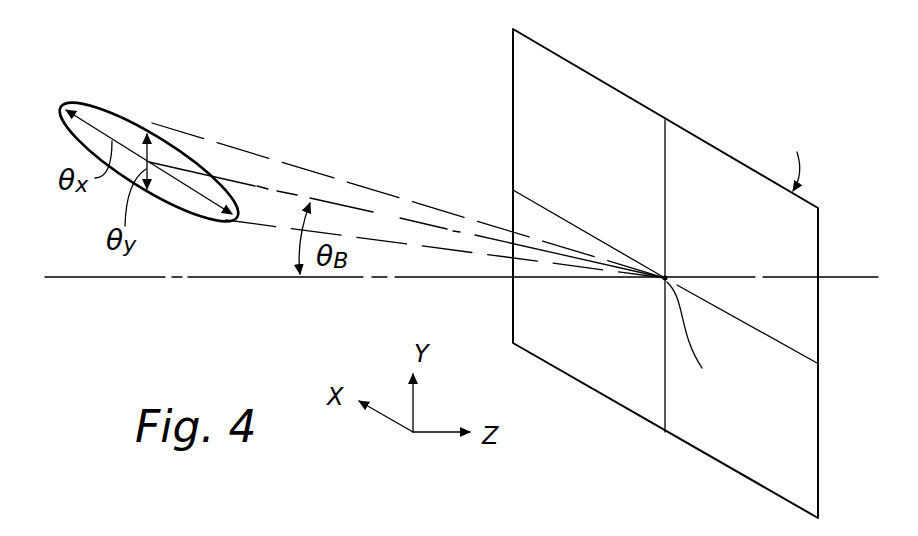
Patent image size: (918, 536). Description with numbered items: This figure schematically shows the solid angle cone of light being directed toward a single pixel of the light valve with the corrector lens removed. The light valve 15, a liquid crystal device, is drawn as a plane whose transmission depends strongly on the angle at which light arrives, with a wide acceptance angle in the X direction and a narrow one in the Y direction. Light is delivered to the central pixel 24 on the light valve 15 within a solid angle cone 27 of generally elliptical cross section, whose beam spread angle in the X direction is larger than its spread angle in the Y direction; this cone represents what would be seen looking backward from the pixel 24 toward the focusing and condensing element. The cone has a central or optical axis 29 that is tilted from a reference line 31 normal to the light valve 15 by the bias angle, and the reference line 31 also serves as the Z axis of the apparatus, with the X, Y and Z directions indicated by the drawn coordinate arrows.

The light valve 15 is at (665, 120).
The central pixel 24 is at (665, 278).
The solid angle cone 27 is at (301, 168).
The optical axis 29 is at (377, 212).
The reference line 31 is at (225, 278).